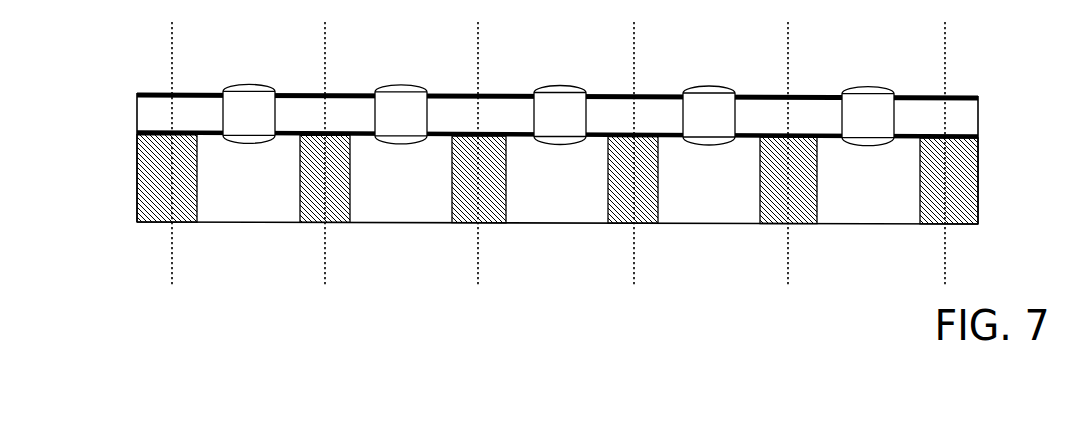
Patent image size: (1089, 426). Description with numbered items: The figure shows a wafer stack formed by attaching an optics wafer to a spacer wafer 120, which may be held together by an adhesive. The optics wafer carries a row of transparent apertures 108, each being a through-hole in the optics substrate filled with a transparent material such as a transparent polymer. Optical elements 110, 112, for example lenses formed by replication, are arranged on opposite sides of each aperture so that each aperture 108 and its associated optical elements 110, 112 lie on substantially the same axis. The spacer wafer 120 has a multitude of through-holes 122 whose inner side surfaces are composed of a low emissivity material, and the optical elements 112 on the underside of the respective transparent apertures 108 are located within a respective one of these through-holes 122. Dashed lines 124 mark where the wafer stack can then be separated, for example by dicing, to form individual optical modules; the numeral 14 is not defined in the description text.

The substrate 14 is at (137, 115).
The transparent aperture 108 is at (233, 110).
The optical element 110 is at (246, 90).
The optical element 112 is at (243, 144).
The spacer wafer 120 is at (137, 182).
The through-hole 122 is at (215, 213).
The line 124 is at (326, 66).